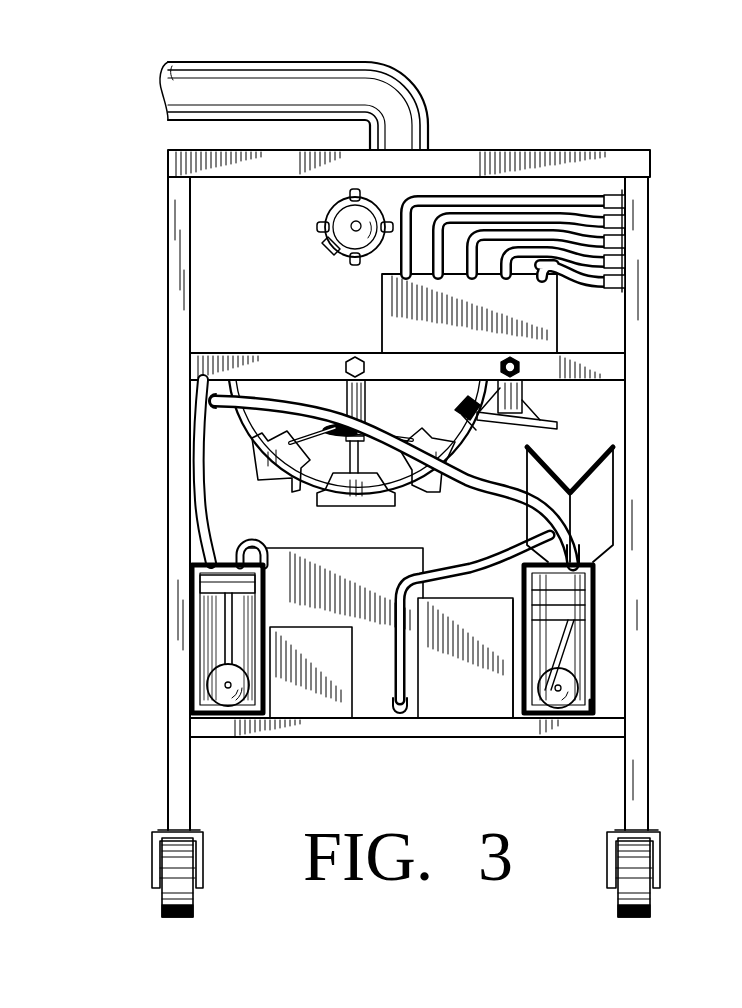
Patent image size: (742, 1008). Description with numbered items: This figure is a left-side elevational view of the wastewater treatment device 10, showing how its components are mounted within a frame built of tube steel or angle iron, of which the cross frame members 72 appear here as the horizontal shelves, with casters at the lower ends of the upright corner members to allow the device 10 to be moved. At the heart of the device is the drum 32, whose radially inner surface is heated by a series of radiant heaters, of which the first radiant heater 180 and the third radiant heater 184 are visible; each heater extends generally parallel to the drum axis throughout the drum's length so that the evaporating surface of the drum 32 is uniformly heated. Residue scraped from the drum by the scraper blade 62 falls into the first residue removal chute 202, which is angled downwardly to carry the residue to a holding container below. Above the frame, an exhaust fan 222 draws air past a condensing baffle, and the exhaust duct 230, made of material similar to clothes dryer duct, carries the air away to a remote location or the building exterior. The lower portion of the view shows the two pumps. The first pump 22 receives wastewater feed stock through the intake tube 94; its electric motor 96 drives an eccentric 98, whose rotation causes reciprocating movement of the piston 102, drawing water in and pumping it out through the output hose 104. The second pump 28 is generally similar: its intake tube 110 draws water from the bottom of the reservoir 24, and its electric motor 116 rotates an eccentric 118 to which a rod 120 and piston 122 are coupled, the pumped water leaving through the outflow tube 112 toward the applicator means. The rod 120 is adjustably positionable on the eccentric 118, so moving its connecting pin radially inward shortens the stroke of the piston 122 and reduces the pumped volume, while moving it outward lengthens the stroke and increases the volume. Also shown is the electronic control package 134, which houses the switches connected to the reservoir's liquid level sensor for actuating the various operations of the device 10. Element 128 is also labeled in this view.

The device 10 is at (584, 114).
The first pump 22 is at (175, 644).
The reservoir 24 is at (374, 576).
The second pump 28 is at (594, 698).
The drum 32 is at (242, 455).
The scraper blade 62 is at (478, 428).
The cross frame members 72 is at (600, 375).
The intake tube 94 is at (207, 498).
The electric motor 96 is at (290, 700).
The eccentric 98 is at (188, 693).
The piston 102 is at (198, 563).
The output hose 104 is at (238, 552).
The intake tube 110 is at (471, 624).
The outflow tube 112 is at (582, 547).
The electric motor 116 is at (457, 700).
The eccentric 118 is at (533, 730).
The rod 120 is at (517, 677).
The piston 122 is at (612, 669).
The pump rod 128 is at (222, 622).
The electronic control package 134 is at (382, 295).
The first radiant heater 180 is at (418, 435).
The third radiant heater 184 is at (217, 423).
The first residue removal chute 202 is at (590, 508).
The exhaust fan 222 is at (322, 217).
The exhaust duct 230 is at (216, 84).